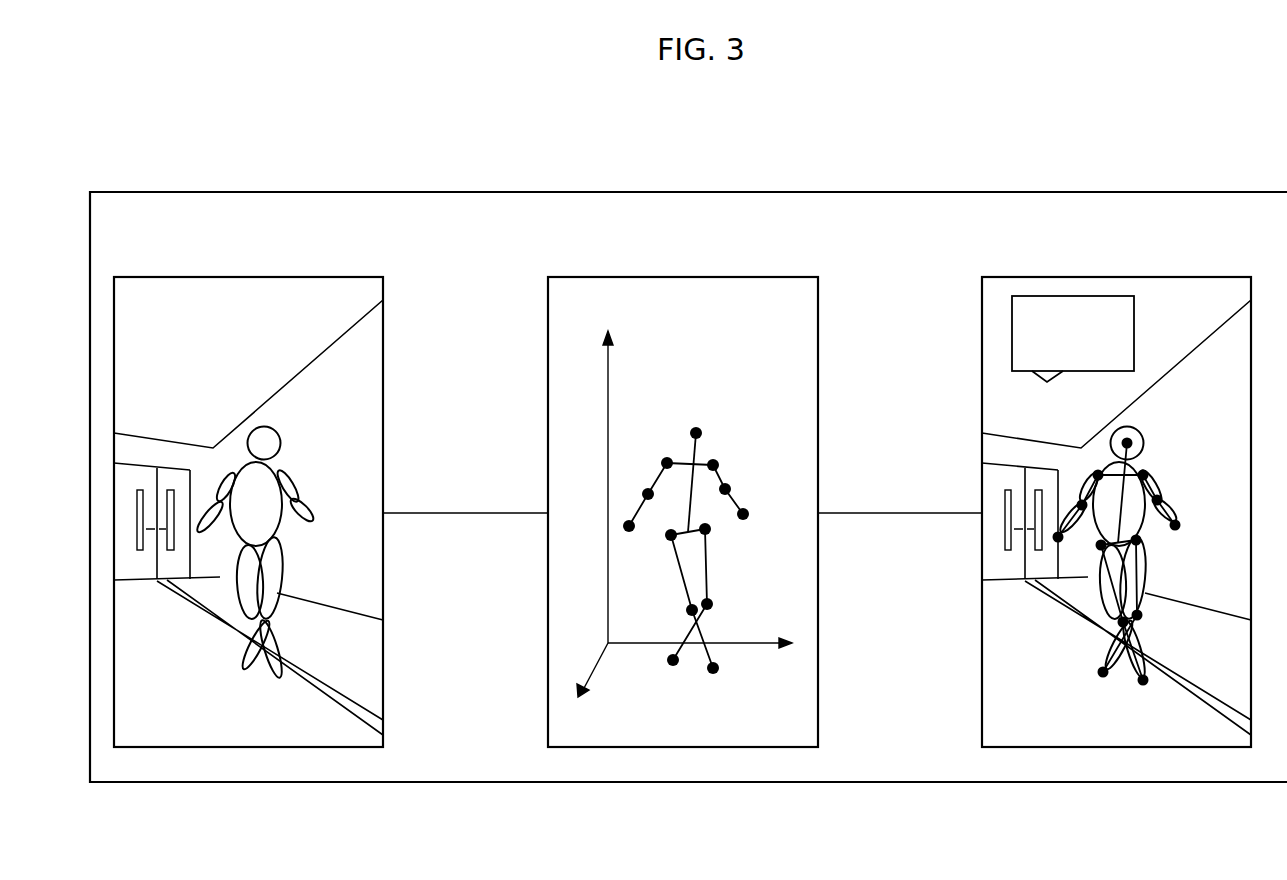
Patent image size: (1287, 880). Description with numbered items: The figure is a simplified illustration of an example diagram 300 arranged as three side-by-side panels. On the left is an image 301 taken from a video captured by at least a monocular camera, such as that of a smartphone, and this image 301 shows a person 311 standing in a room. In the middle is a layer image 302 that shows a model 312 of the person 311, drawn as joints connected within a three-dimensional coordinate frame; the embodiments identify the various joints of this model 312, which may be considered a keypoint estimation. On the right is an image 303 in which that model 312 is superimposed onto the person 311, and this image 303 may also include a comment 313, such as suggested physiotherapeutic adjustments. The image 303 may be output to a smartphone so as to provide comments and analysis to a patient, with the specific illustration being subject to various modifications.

The diagram 300 is at (76, 144).
The image 301 is at (204, 277).
The layer image 302 is at (598, 277).
The image 303 is at (1000, 277).
The person 311 is at (281, 431).
The model 312 is at (717, 457).
The comment 313 is at (1134, 320).